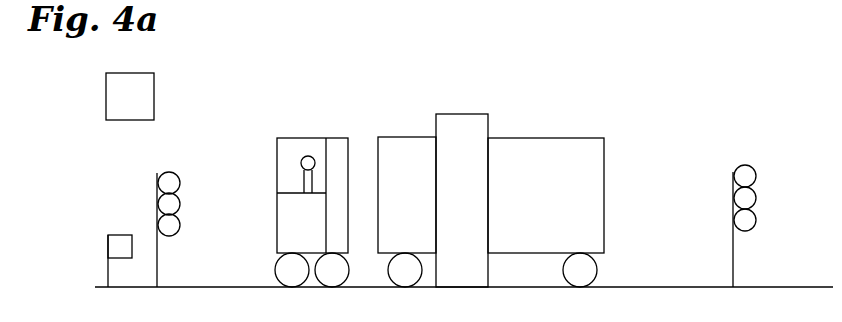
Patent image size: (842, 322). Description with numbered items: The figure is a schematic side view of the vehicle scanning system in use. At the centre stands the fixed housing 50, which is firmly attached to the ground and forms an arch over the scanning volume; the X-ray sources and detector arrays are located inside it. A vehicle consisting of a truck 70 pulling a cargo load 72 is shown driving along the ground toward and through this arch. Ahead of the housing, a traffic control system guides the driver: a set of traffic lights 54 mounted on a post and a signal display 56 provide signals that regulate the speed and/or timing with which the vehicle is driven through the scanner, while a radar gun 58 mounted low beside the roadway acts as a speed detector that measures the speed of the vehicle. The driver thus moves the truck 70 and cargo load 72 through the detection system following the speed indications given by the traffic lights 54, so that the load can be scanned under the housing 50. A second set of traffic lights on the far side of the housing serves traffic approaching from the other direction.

The fixed housing 50 is at (462, 114).
The traffic lights 54 is at (178, 173).
The signal display 56 is at (137, 97).
The radar gun 58 is at (120, 243).
The truck 70 is at (303, 138).
The cargo load 72 is at (578, 138).